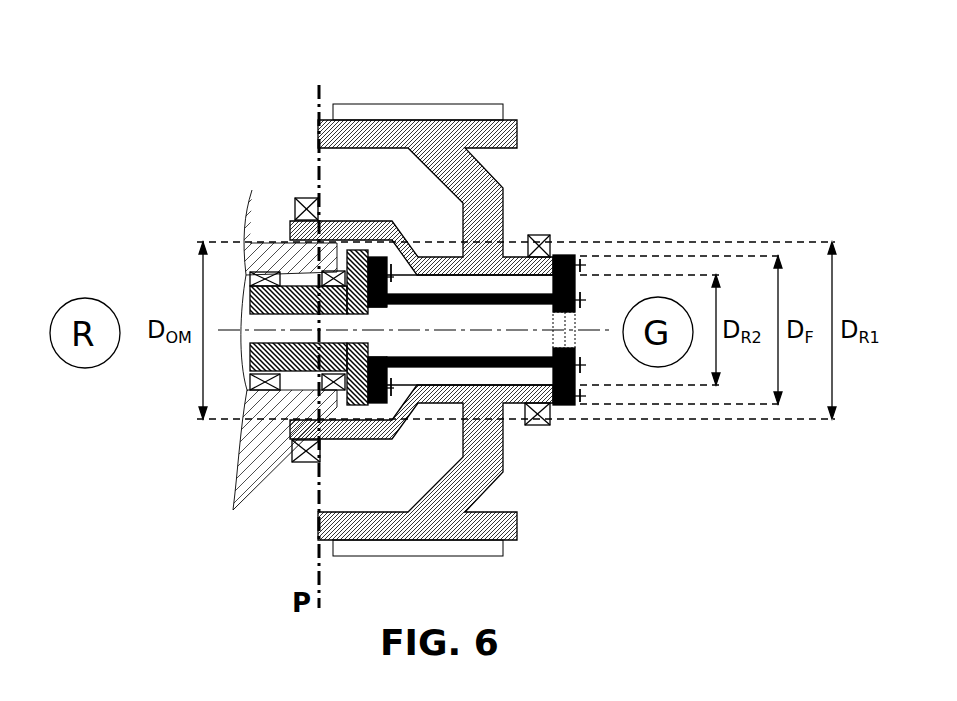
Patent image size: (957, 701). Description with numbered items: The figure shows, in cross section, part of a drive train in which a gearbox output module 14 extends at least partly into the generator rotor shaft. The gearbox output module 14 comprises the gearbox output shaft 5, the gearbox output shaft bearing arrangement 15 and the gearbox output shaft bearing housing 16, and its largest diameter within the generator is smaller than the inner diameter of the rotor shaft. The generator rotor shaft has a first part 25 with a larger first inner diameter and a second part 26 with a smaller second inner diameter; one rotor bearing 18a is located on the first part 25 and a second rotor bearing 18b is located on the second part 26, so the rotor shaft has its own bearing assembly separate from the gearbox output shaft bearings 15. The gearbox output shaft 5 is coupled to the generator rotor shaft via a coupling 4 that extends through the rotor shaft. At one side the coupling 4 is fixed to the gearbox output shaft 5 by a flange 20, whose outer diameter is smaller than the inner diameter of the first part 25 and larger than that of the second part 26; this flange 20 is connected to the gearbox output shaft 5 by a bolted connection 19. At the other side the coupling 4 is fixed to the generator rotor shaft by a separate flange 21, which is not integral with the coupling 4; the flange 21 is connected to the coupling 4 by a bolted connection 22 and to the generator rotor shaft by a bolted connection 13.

The coupling 4 is at (508, 295).
The gearbox output shaft 5 is at (372, 258).
The bolted connection 13 is at (582, 300).
The gearbox output module 14 is at (405, 56).
The gearbox output shaft bearing arrangement 15 is at (343, 278).
The gearbox output shaft bearing housing 16 is at (336, 284).
The rotor bearing 18a is at (312, 213).
The second rotor bearing 18b is at (545, 250).
The bolted connection 19 is at (384, 258).
The flange 20 is at (391, 273).
The flange 21 is at (567, 256).
The bolted connection 22 is at (582, 264).
The first part 25 is at (330, 448).
The second part 26 is at (513, 414).